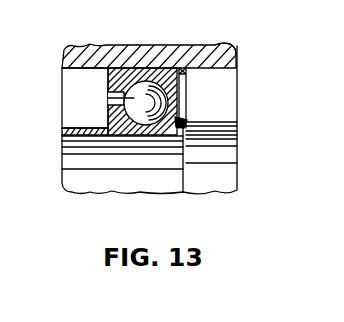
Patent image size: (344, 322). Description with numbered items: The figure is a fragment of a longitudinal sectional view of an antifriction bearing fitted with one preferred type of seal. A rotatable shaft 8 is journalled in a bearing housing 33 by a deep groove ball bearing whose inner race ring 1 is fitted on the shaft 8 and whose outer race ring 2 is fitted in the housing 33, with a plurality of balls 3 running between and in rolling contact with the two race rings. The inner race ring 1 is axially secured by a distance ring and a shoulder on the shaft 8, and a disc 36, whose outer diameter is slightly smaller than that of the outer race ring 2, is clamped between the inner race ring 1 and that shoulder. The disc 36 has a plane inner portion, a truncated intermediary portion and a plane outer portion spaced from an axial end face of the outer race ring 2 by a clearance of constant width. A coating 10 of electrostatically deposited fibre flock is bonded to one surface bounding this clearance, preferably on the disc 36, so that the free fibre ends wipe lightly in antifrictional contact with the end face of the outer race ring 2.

The outer race ring 2 is at (122, 56).
The bearing housing 33 is at (232, 52).
The balls 3 is at (108, 93).
The inner race ring 1 is at (108, 123).
The coating 10 is at (186, 98).
The disc 36 is at (187, 112).
The rotatable shaft 8 is at (228, 140).